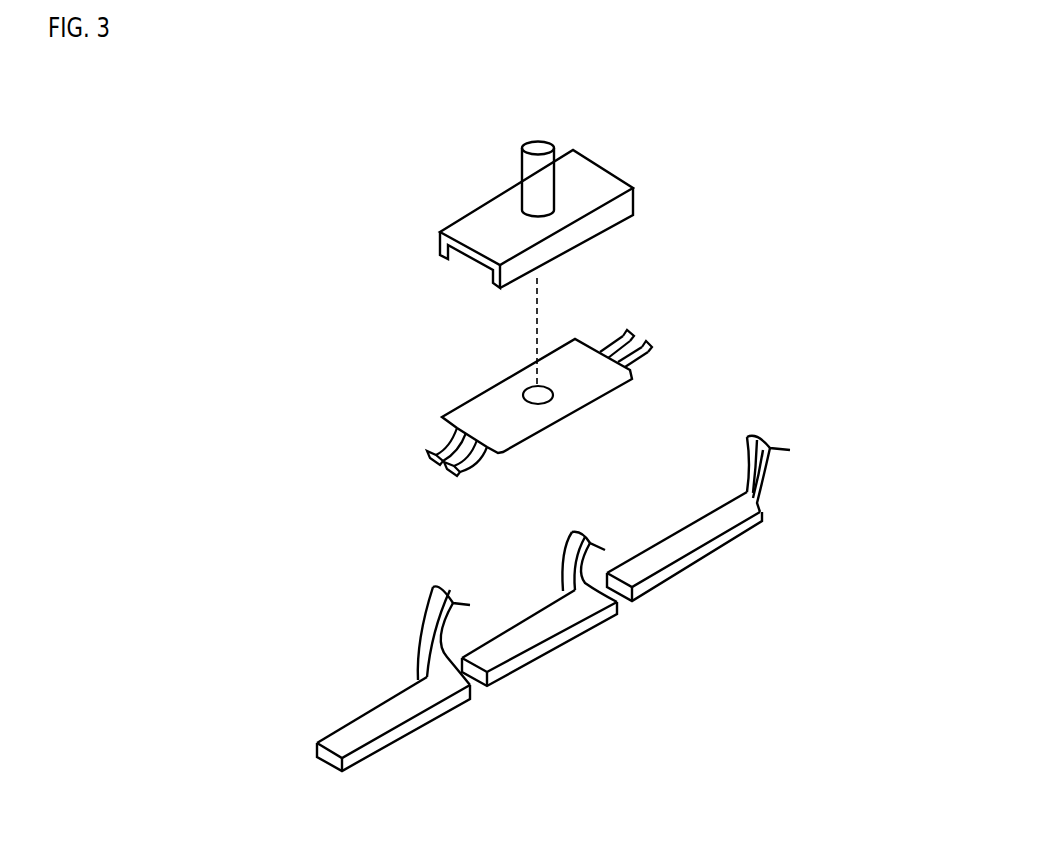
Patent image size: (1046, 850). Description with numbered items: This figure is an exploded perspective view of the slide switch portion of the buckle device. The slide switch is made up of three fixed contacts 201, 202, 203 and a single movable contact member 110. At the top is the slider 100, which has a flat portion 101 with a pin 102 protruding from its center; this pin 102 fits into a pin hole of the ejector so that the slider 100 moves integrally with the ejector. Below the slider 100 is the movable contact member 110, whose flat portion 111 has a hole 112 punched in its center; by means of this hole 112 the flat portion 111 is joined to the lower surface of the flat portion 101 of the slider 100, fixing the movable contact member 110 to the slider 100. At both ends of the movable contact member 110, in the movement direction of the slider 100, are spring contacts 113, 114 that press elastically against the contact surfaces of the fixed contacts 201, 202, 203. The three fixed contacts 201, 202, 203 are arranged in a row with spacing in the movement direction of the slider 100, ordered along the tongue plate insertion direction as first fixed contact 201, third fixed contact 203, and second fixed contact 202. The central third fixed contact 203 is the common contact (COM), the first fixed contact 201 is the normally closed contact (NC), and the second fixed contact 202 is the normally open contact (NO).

The slider 100 is at (560, 238).
The flat portion 101 is at (585, 190).
The pin 102 is at (521, 158).
The movable contact member 110 is at (529, 409).
The flat portion 111 is at (490, 385).
The hole 112 is at (523, 393).
The spring contact 113 is at (427, 457).
The spring contact 114 is at (653, 345).
The first fixed contact 201 is at (408, 725).
The second fixed contact 202 is at (697, 557).
The third fixed contact 203 is at (553, 642).